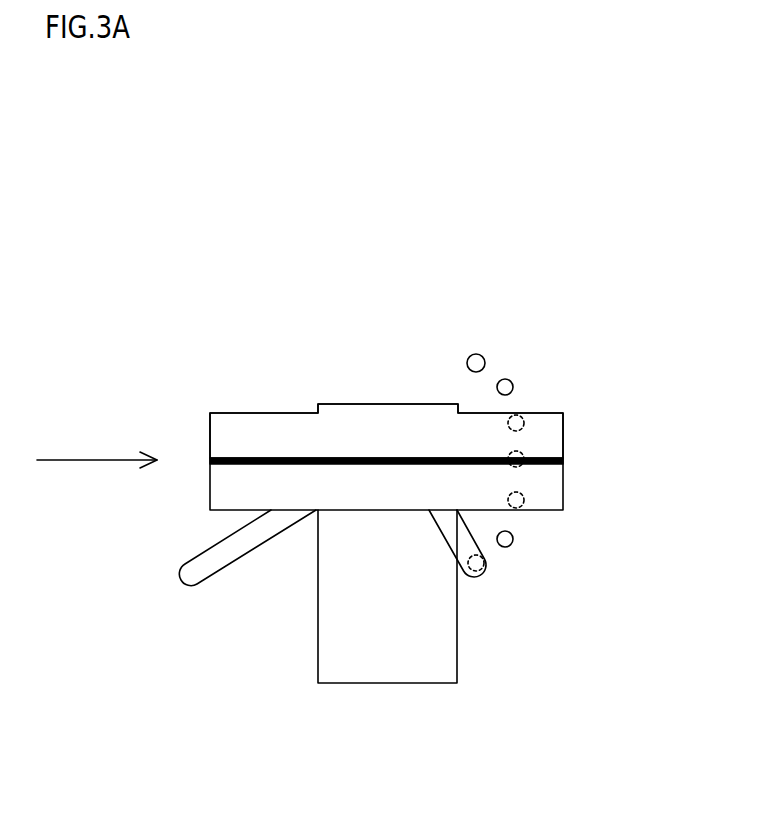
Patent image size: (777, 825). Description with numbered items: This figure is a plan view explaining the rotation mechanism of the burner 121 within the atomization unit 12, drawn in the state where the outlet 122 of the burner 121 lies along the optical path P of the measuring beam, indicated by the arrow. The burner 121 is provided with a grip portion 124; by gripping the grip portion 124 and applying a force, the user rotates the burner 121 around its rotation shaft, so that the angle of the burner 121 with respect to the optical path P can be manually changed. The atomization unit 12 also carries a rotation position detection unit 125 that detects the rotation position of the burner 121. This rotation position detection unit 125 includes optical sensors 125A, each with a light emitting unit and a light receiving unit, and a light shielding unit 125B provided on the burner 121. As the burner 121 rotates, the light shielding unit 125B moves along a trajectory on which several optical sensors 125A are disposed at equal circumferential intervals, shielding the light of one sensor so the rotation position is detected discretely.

The atomization unit 12 is at (386, 430).
The burner 121 is at (220, 418).
The outlet 122 is at (272, 456).
The grip portion 124 is at (213, 568).
The rotation position detection unit 125 is at (530, 552).
The optical sensor 125A is at (513, 380).
The light shielding unit 125B is at (482, 575).
The optical path of the measuring beam P is at (92, 460).